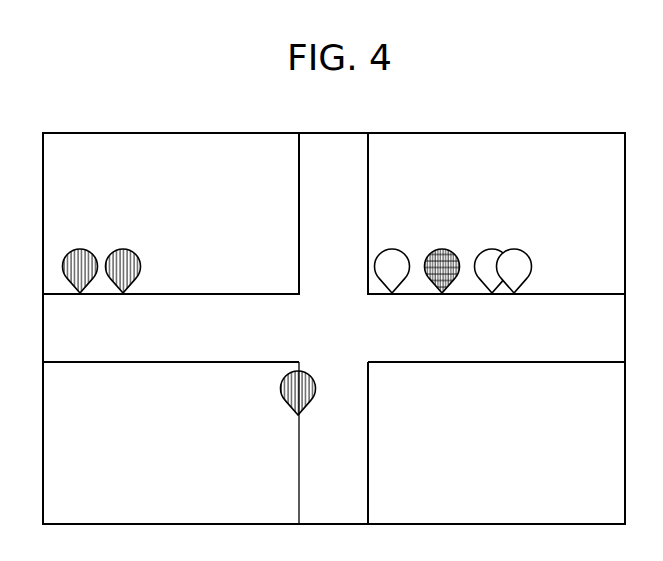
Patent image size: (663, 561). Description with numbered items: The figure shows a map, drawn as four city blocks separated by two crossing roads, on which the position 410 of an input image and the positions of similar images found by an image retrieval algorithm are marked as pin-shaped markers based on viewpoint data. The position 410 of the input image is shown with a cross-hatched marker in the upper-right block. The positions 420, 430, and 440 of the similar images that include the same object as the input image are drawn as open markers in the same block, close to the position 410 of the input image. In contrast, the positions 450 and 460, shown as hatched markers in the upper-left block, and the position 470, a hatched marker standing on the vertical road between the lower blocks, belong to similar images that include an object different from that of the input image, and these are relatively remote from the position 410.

The position of the input image 410 is at (440, 250).
The position of similar image 420 is at (388, 250).
The position of similar image 430 is at (490, 250).
The position of similar image 440 is at (516, 250).
The position of similar image 450 is at (79, 249).
The position of similar image 460 is at (125, 249).
The position of similar image 470 is at (300, 372).